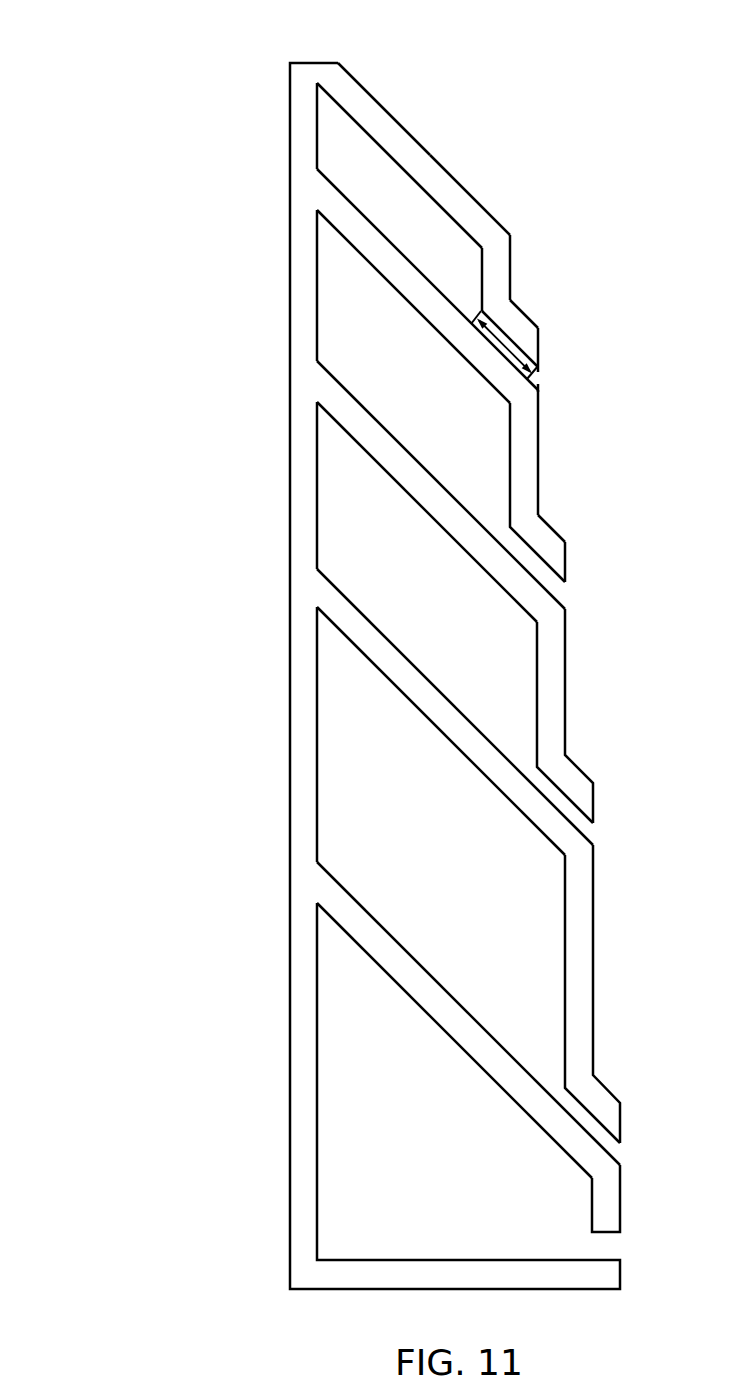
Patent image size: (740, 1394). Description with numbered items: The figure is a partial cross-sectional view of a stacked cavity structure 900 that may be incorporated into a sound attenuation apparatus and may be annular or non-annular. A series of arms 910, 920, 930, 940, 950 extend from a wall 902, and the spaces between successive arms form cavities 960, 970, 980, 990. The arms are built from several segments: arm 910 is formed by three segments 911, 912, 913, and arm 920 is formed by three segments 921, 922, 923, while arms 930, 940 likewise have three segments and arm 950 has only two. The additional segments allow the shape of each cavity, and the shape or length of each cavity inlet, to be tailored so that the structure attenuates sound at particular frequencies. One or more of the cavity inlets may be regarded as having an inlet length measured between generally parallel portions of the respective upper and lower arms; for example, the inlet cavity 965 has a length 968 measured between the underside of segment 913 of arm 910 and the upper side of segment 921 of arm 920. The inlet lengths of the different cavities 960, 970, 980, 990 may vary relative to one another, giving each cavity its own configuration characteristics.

The stacked cavity structure 900 is at (140, 97).
The wall 902 is at (300, 203).
The arm 910 is at (386, 110).
The segment 911 is at (467, 203).
The segment 912 is at (500, 263).
The segment 913 is at (520, 323).
The arm 920 is at (370, 223).
The segment 921 is at (399, 270).
The segment 922 is at (525, 446).
The segment 923 is at (549, 541).
The arm 930 is at (372, 414).
The arm 940 is at (376, 627).
The arm 950 is at (373, 918).
The cavity 960 is at (463, 260).
The inlet cavity 965 is at (544, 386).
The length 968 is at (511, 353).
The cavity 970 is at (480, 437).
The cavity 980 is at (496, 649).
The cavity 990 is at (506, 922).